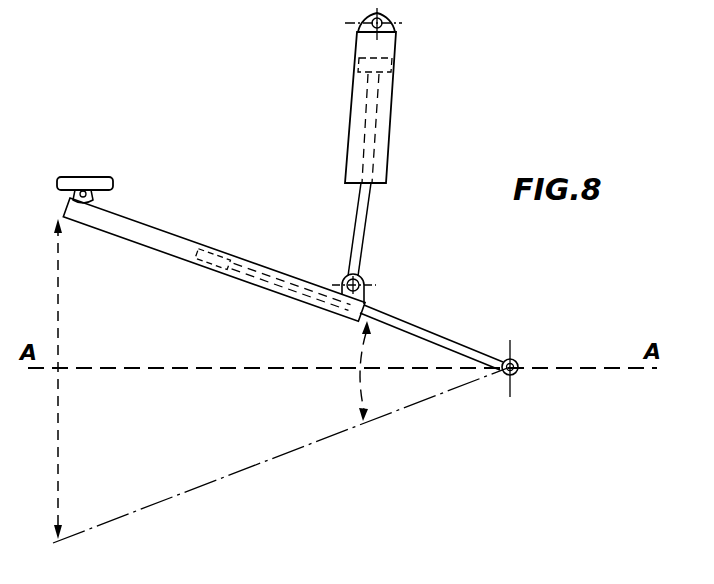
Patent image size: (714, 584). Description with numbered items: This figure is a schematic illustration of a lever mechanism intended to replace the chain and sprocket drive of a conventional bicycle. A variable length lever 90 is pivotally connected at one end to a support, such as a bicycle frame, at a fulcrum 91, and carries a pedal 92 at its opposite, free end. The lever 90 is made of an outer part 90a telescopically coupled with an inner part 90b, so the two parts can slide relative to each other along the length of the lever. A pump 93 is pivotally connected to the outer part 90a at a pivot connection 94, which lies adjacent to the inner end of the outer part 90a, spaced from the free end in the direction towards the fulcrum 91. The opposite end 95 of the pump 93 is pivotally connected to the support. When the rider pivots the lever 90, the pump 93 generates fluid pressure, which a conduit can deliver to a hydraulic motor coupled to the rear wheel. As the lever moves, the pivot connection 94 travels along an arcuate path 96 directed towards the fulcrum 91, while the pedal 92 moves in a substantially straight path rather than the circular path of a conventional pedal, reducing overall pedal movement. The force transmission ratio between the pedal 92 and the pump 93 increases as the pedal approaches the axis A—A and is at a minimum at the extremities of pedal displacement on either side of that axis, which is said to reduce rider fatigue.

The variable length lever 90 is at (213, 229).
The outer part 90a is at (140, 244).
The inner part 90b is at (422, 330).
The fulcrum 91 is at (520, 352).
The pedal 92 is at (86, 178).
The pump 93 is at (392, 120).
The pivot connection 94 is at (361, 281).
The opposite end 95 is at (386, 27).
The angle of travel 96 is at (375, 398).